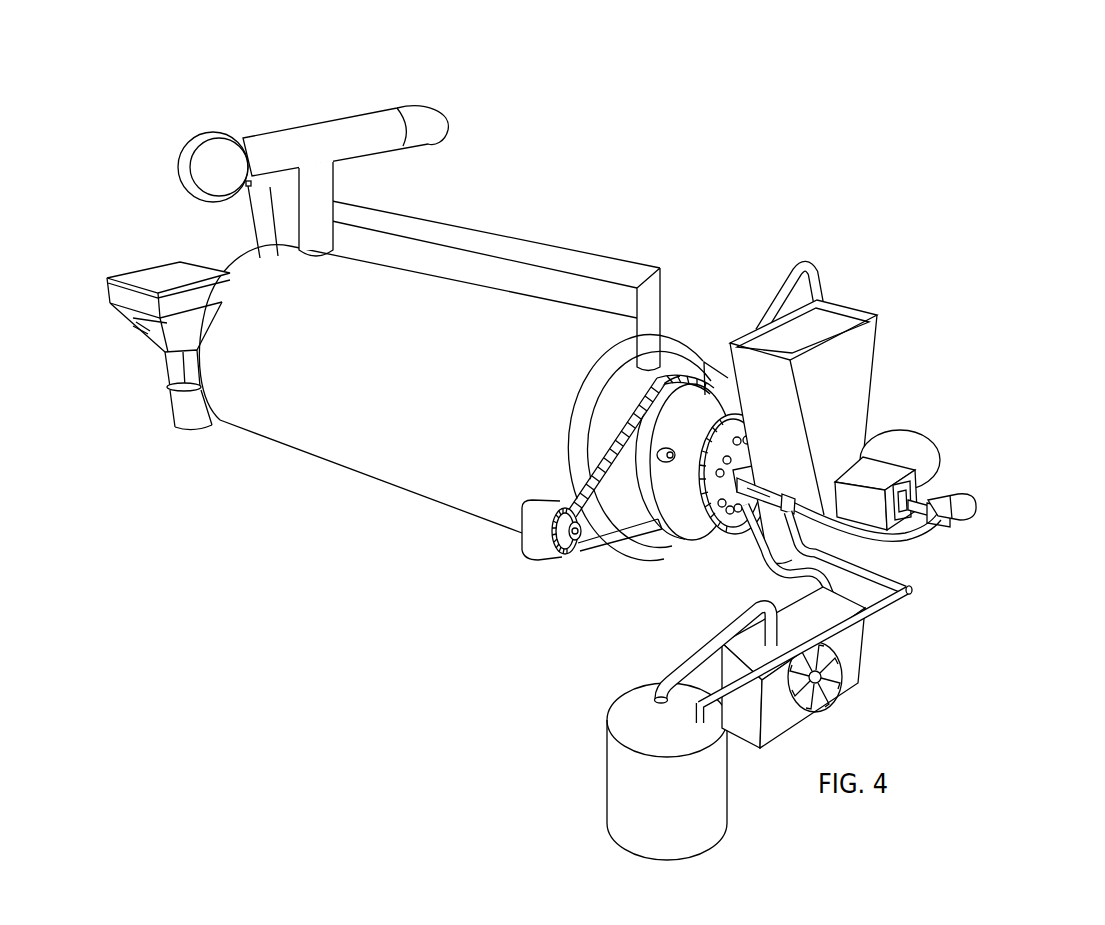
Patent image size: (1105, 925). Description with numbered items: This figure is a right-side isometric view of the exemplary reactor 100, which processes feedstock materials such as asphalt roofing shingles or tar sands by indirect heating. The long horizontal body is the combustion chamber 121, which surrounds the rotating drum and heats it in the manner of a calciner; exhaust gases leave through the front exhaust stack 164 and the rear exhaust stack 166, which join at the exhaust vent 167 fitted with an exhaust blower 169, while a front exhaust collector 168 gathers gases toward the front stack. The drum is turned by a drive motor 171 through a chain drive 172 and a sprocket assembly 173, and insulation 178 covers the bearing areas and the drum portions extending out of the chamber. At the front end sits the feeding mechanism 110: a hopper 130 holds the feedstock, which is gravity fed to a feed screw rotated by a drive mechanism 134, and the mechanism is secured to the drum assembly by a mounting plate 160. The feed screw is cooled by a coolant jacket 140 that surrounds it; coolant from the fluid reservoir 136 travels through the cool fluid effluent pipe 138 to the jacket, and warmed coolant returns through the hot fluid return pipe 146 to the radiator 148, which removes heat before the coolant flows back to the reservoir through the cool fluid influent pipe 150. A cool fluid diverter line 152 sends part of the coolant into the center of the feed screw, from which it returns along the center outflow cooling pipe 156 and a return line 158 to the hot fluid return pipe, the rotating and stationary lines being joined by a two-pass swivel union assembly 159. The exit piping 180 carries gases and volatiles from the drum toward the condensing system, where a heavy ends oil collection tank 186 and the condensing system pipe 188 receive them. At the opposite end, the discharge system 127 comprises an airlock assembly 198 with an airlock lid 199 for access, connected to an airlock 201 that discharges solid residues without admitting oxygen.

The reactor 100 is at (564, 450).
The feeding mechanism 110 is at (853, 476).
The combustion chamber 121 is at (480, 295).
The discharge system 127 is at (140, 340).
The hopper 130 is at (782, 384).
The drive mechanism 134 is at (862, 477).
The fluid reservoir 136 is at (643, 752).
The cool fluid effluent pipe 138 is at (915, 592).
The coolant jacket 140 is at (748, 504).
The hot fluid return pipe 146 is at (773, 578).
The radiator 148 is at (862, 683).
The cool fluid influent pipe 150 is at (660, 668).
The cool fluid diverter line 152 is at (973, 507).
The center outflow cooling pipe 156 is at (926, 452).
The return line 158 is at (913, 530).
The two-pass swivel union assembly 159 is at (937, 513).
The mounting plate 160 is at (720, 518).
The front exhaust stack 164 is at (660, 268).
The rear exhaust stack 166 is at (245, 221).
The exhaust vent 167 is at (283, 143).
The front exhaust collector 168 is at (630, 400).
The exhaust blower 169 is at (210, 150).
The drive motor 171 is at (520, 550).
The chain drive 172 is at (575, 541).
The sprocket assembly 173 is at (563, 550).
The insulation 178 is at (688, 518).
The exit piping 180 is at (797, 267).
The heavy ends oil collection tank 186 is at (815, 548).
The condensing system pipe 188 is at (810, 297).
The airlock assembly 198 is at (110, 307).
The airlock lid 199 is at (143, 268).
The airlock 201 is at (153, 406).